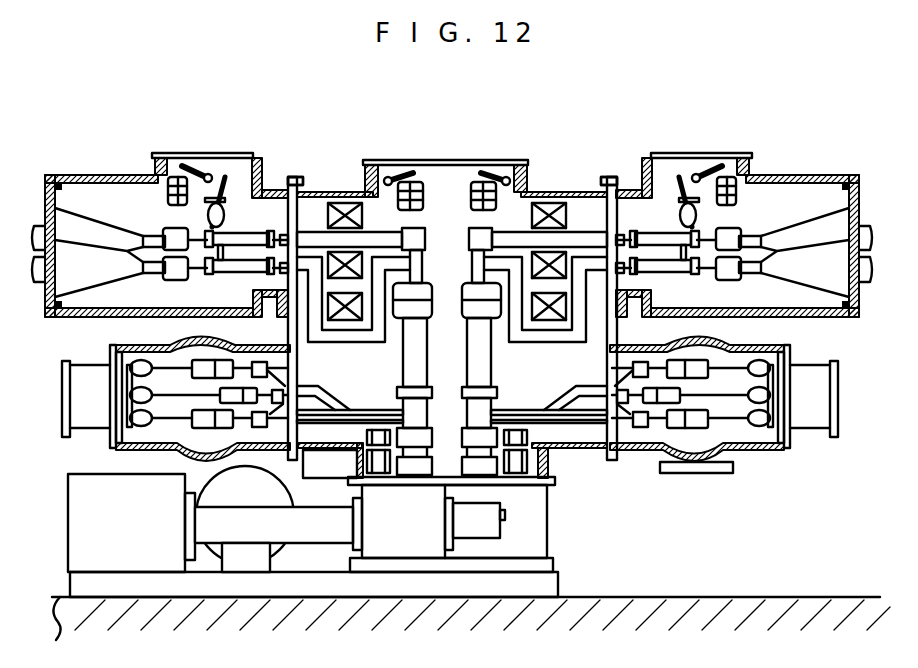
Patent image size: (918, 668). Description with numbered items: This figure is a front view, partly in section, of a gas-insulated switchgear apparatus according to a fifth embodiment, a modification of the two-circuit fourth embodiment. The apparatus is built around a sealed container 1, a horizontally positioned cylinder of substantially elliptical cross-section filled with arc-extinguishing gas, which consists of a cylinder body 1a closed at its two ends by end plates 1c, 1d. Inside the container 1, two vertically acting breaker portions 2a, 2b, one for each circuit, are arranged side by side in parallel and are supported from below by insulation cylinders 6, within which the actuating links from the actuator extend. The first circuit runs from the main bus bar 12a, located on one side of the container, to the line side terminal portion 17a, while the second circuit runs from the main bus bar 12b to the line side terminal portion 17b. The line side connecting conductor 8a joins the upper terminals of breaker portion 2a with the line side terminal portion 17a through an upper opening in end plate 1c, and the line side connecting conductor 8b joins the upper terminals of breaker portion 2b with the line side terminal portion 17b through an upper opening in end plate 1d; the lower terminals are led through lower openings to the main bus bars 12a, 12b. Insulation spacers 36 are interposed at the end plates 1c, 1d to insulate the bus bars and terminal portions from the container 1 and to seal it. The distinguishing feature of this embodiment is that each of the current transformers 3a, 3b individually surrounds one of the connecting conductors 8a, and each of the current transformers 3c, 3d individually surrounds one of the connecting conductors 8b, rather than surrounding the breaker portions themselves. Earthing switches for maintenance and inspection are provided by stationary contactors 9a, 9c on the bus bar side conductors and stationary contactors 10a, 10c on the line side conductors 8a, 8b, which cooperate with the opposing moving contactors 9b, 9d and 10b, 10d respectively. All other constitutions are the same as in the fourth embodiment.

The sealed container 1 is at (322, 232).
The cylinder body 1a is at (575, 192).
The end plate 1c is at (297, 177).
The end plate 1d is at (610, 177).
The breaker portion 2a is at (403, 335).
The breaker portion 2b is at (491, 335).
The current transformer 3a is at (345, 322).
The current transformer 3b is at (345, 203).
The current transformer 3c is at (550, 322).
The current transformer 3d is at (549, 203).
The insulation cylinder 6 is at (490, 455).
The line side connecting conductor 8a is at (318, 232).
The line side connecting conductor 8b is at (583, 232).
The stationary contactor 9a is at (352, 445).
The moving contactor 9b is at (362, 472).
The stationary contactor 9c is at (545, 447).
The moving contactor 9d is at (520, 455).
The stationary contactor 10a is at (392, 185).
The moving contactor 10b is at (403, 228).
The stationary contactor 10c is at (490, 228).
The moving contactor 10d is at (500, 185).
The main bus bar 12a is at (88, 365).
The main bus bar 12b is at (847, 344).
The line side terminal portion 17a is at (130, 175).
The line side terminal portion 17b is at (797, 172).
The insulation spacer 36 is at (290, 177).